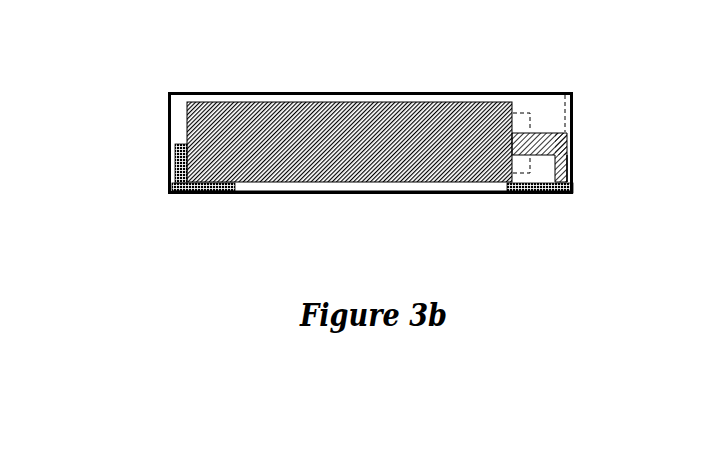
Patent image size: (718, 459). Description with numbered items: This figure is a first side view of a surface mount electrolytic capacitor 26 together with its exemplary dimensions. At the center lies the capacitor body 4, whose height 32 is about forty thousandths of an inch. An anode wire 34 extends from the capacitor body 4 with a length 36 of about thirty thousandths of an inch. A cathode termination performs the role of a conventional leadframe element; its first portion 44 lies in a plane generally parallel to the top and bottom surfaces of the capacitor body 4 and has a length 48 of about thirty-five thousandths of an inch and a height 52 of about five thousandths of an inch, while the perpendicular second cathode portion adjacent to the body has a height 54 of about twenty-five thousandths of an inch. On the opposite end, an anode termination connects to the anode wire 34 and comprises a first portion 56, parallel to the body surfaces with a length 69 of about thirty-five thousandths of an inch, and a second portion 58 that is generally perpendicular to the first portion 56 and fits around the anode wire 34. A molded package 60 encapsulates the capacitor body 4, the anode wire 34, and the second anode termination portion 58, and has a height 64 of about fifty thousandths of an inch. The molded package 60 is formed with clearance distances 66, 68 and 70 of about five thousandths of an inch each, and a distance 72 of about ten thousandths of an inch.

The capacitor body 4 is at (341, 100).
The electrolytic capacitor 26 is at (630, 142).
The height 32 is at (132, 177).
The anode wire 34 is at (542, 134).
The length 36 is at (480, 69).
The first portion of cathode termination 44 is at (194, 192).
The length 48 is at (235, 195).
The height 52 is at (152, 108).
The height 54 is at (113, 145).
The first portion of anode termination 56 is at (574, 190).
The second portion of anode termination 58 is at (568, 160).
The molded package 60 is at (338, 194).
The height 64 is at (170, 93).
The clearance distance 66 is at (152, 208).
The clearance distance 68 is at (207, 225).
The length 69 is at (507, 195).
The clearance distance 70 is at (535, 235).
The distance 72 is at (527, 215).